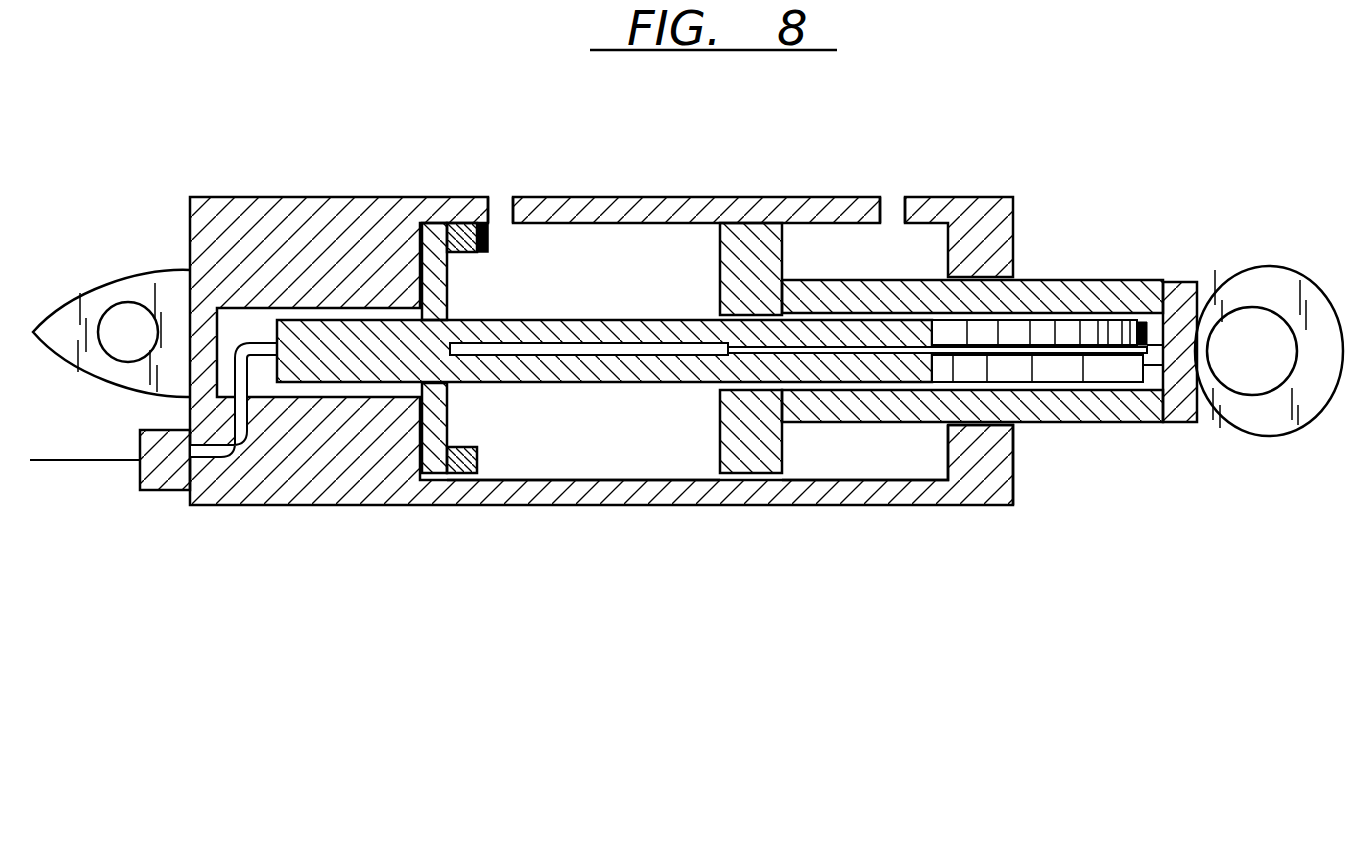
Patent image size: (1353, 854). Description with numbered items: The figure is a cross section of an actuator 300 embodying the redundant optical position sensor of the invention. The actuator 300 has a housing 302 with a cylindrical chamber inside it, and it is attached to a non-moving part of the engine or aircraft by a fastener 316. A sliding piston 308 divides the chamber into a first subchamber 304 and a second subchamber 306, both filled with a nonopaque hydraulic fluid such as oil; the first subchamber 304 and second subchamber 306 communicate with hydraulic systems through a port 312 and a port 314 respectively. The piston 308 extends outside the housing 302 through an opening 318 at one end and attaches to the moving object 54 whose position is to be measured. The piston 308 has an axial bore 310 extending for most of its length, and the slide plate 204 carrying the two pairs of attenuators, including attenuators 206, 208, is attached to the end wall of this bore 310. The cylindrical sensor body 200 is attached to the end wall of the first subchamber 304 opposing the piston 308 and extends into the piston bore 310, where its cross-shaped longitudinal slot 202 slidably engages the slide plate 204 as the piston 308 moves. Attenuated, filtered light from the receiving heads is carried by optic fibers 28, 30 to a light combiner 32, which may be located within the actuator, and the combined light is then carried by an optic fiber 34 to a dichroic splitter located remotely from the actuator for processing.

The optic fiber 28 is at (215, 420).
The optic fiber 30 is at (215, 457).
The light combiner 32 is at (152, 490).
The optic fiber 34 is at (78, 460).
The moving object 54 is at (1283, 283).
The sensor body 200 is at (343, 332).
The longitudinal slot 202 is at (538, 345).
The slide plate 204 is at (1153, 365).
The attenuator 206 is at (1095, 367).
The attenuator 208 is at (1087, 332).
The actuator 300 is at (1005, 107).
The housing 302 is at (315, 483).
The first subchamber 304 is at (593, 457).
The second subchamber 306 is at (843, 465).
The sliding piston 308 is at (742, 463).
The axial bore 310 is at (1042, 388).
The port 312 is at (522, 153).
The port 314 is at (892, 197).
The fastener 316 is at (58, 305).
The opening 318 is at (1014, 277).